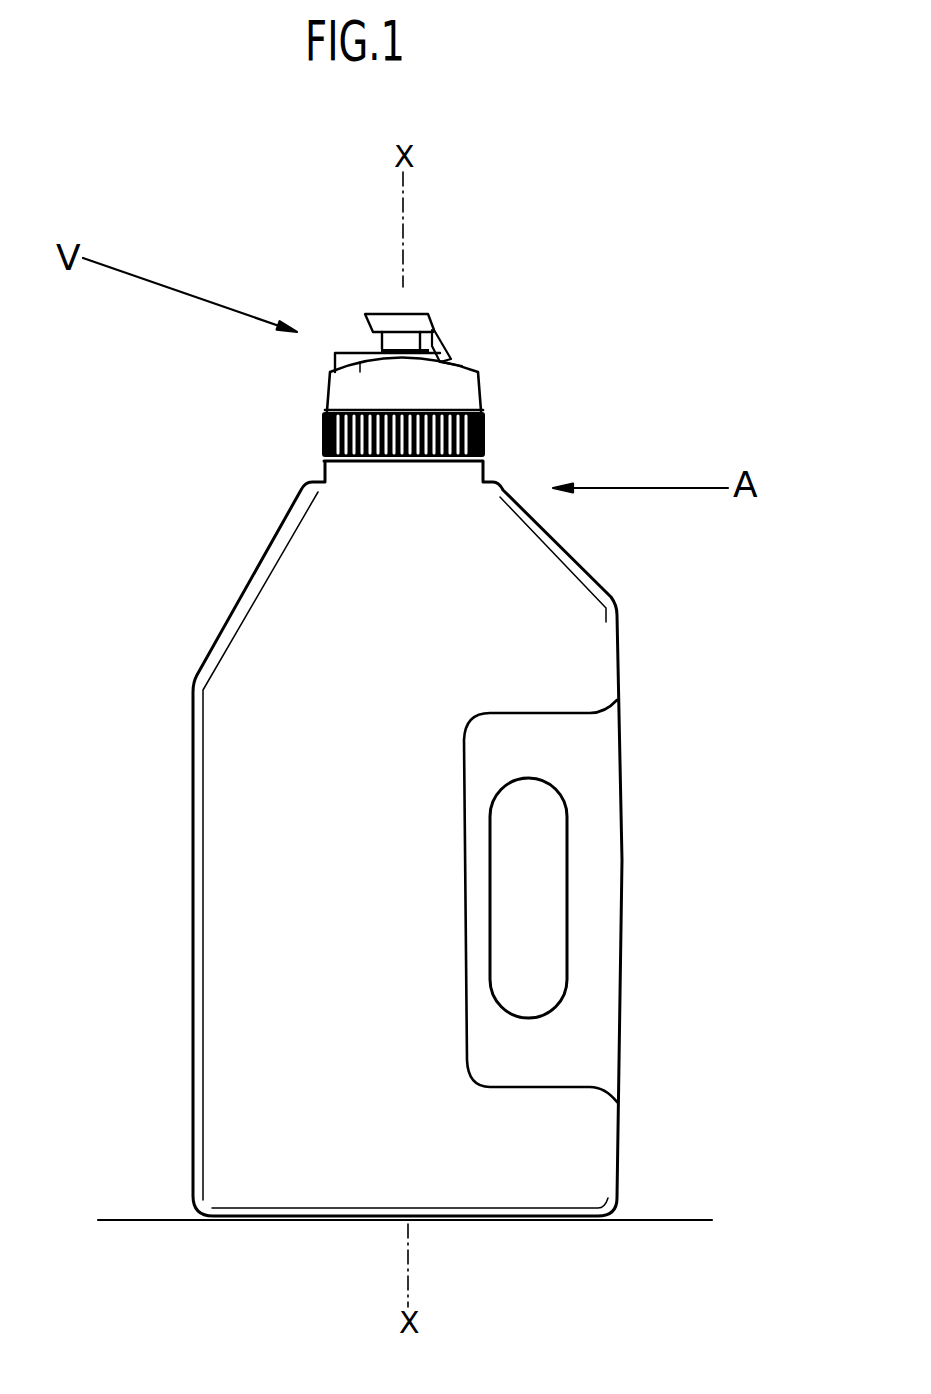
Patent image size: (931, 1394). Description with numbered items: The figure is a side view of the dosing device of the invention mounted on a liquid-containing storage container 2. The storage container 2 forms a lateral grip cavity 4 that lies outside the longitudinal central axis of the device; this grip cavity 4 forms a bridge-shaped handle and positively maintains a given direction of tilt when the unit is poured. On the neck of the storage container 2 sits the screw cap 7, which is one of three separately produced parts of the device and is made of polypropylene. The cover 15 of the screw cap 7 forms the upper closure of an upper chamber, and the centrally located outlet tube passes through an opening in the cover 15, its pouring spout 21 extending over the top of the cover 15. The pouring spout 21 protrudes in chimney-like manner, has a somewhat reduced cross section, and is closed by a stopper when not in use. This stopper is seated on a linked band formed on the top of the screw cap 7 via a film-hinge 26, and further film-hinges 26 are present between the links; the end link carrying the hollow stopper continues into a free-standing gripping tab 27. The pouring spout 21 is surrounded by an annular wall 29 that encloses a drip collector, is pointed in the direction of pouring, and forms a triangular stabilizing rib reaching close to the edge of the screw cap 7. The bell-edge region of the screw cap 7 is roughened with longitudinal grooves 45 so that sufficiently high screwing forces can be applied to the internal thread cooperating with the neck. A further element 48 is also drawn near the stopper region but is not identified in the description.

The bottle body 2 is at (555, 638).
The handle opening 4 is at (533, 872).
The closure cap 7 is at (490, 365).
The hinge 15 is at (372, 368).
The spout neck 21 is at (393, 340).
The sealing lip 26 is at (450, 357).
The spout edge 27 is at (360, 314).
The cap collar 29 is at (335, 360).
The knurled screw ring 45 is at (485, 433).
The tear-off tab 48 is at (455, 360).